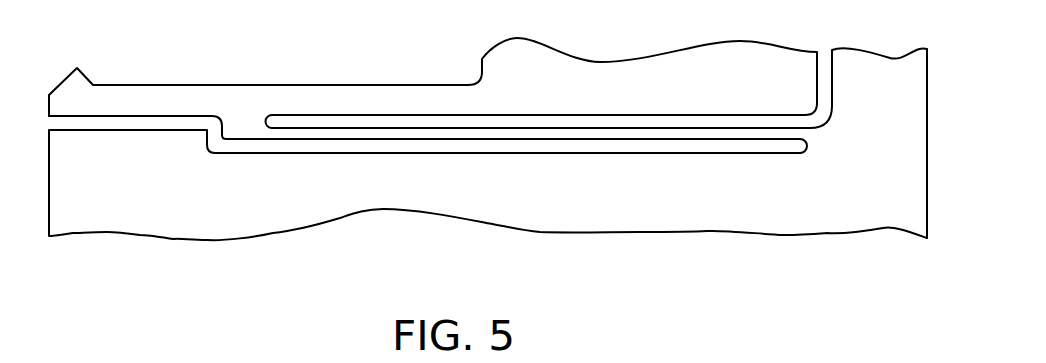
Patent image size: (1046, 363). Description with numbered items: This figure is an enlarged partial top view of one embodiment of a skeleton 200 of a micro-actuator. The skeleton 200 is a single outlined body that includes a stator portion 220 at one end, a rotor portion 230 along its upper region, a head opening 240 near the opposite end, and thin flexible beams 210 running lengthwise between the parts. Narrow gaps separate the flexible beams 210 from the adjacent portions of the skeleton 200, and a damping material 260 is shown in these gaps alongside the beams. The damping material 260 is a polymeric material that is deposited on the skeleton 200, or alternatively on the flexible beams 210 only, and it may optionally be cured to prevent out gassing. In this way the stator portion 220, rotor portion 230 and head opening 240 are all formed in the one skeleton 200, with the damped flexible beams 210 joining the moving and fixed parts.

The skeleton 200 is at (148, 215).
The flexible beams 210 is at (323, 135).
The stator portion 220 is at (857, 65).
The rotor portion 230 is at (695, 57).
The head opening 240 is at (147, 58).
The damping material 260 is at (618, 250).